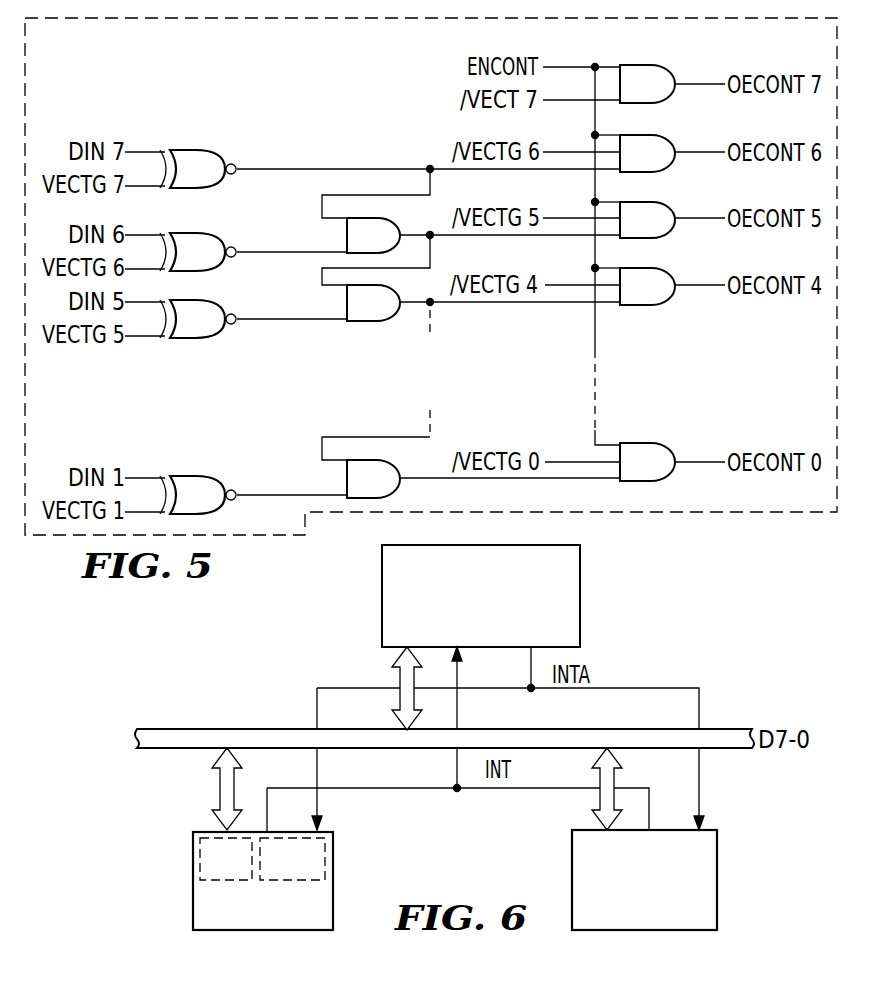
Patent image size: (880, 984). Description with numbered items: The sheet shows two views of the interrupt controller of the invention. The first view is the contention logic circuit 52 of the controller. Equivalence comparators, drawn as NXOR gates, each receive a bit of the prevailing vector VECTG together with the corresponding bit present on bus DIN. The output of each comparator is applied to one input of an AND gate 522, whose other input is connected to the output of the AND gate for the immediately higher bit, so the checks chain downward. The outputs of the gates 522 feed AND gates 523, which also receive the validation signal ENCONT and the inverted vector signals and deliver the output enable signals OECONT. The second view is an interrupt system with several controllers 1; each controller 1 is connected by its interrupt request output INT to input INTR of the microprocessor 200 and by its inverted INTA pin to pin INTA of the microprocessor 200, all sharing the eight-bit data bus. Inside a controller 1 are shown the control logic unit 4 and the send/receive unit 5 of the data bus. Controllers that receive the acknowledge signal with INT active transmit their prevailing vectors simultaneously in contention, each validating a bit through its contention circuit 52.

In FIG. 5, the contention logic circuit 52 is at (342, 60).
In FIG. 5, the AND gate 522 is at (350, 236).
In FIG. 5, the AND gate 523 is at (660, 78).
In FIG. 6, the microprocessor 200 is at (580, 598).
In FIG. 6, the controller 1 is at (333, 919).
In FIG. 6, the control logic unit 4 is at (325, 858).
In FIG. 6, the send/receive unit 5 is at (200, 858).